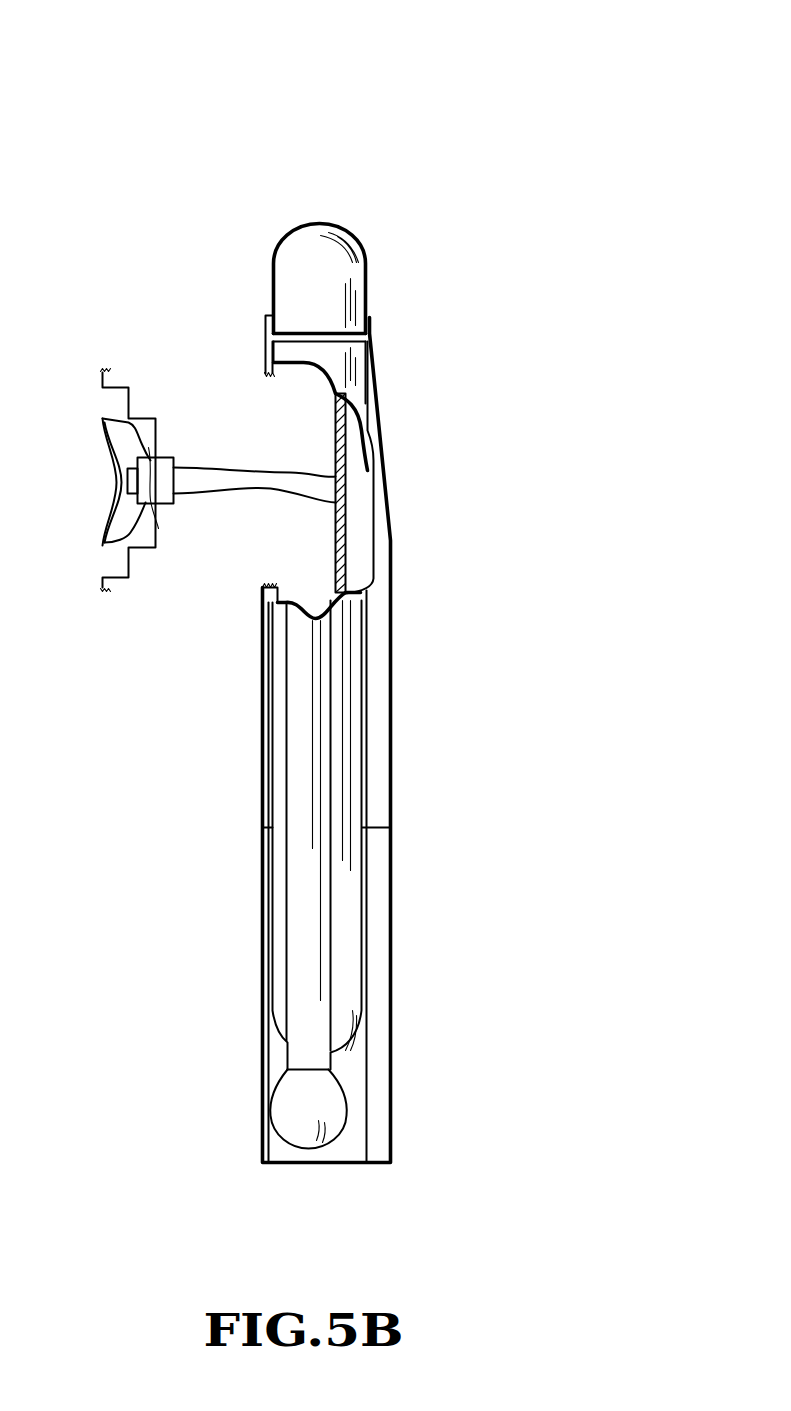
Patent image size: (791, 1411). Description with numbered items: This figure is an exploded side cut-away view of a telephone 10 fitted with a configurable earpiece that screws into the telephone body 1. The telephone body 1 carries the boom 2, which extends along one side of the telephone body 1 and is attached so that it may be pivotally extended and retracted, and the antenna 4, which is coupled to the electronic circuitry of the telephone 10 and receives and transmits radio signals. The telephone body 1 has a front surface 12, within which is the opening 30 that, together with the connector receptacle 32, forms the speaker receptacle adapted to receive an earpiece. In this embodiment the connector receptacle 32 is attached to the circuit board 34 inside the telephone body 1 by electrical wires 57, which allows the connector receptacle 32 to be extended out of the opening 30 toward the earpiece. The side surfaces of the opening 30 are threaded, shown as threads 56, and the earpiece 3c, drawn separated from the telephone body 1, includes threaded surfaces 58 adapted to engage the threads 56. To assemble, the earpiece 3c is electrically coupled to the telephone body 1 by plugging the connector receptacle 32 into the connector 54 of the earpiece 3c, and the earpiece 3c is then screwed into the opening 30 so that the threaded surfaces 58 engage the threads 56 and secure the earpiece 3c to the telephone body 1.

The telephone 10 is at (420, 58).
The telephone body 1 is at (378, 1082).
The boom 2 is at (292, 960).
The antenna 4 is at (290, 240).
The front surface 12 is at (238, 690).
The opening 30 is at (288, 424).
The connector receptacle 32 is at (160, 452).
The circuit board 34 is at (345, 570).
The earpiece 3c is at (113, 412).
The connector 54 is at (145, 502).
The threads 56 is at (265, 386).
The electrical wires 57 is at (289, 470).
The threaded surfaces 58 is at (106, 370).